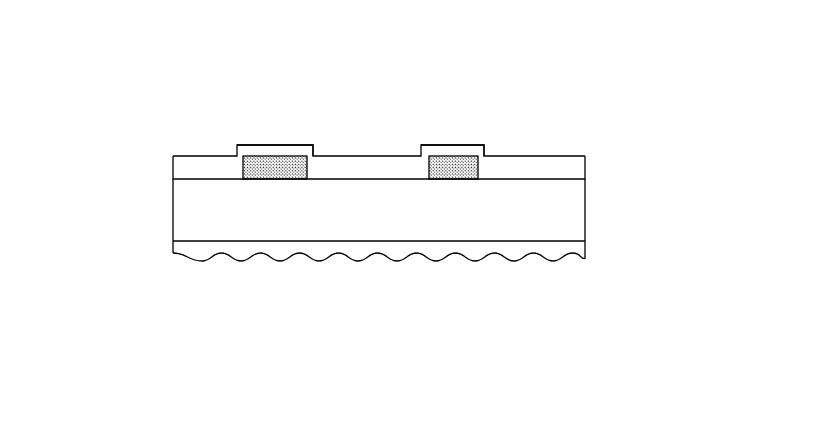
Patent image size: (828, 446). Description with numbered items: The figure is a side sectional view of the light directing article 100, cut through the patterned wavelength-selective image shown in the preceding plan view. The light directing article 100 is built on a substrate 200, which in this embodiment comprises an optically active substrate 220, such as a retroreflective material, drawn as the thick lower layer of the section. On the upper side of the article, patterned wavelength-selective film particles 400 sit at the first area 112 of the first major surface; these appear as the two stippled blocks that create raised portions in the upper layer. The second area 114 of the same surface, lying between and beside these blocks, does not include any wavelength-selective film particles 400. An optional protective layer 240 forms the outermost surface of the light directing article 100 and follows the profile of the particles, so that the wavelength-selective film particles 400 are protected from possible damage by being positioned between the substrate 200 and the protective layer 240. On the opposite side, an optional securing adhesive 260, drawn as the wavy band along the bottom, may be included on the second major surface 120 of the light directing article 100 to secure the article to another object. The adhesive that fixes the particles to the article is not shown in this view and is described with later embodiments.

The light directing article 100 is at (135, 63).
The first area 112 is at (303, 129).
The second area 114 is at (555, 141).
The second major surface 120 is at (222, 275).
The substrate 200 is at (602, 188).
The optically active substrate 220 is at (575, 215).
The protective layer 240 is at (215, 156).
The securing adhesive 260 is at (547, 257).
The wavelength-selective film particles 400 is at (285, 162).